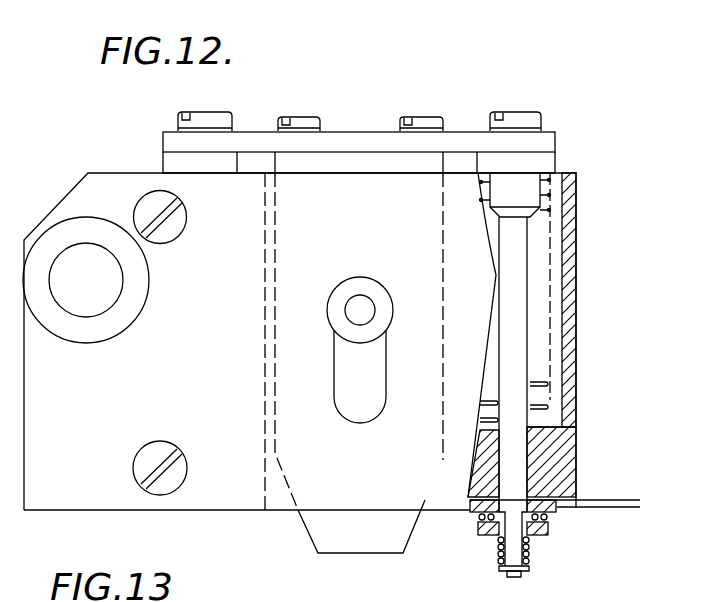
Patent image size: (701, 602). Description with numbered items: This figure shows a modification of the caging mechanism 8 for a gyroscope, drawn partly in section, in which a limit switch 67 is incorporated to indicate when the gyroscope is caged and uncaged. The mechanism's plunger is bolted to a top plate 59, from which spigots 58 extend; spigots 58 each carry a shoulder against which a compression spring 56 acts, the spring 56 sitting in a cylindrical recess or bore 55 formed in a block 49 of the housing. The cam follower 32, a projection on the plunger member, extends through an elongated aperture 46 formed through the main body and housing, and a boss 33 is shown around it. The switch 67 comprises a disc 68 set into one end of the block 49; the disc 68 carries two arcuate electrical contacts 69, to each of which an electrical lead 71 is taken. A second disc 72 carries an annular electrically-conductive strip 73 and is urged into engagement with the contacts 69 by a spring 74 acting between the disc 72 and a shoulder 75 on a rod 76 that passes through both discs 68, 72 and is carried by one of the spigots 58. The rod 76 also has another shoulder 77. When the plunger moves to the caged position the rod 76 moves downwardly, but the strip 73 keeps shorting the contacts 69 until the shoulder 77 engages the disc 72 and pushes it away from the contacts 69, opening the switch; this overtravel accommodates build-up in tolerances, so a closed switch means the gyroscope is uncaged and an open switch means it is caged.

The caging mechanism 8 is at (381, 124).
The top plate 59 is at (353, 140).
The spigot 58 is at (175, 163).
The compression spring 56 is at (550, 208).
The cylindrical recess or bore 55 is at (557, 311).
The block 49 is at (555, 444).
The boss 33 is at (373, 283).
The cam follower 32 is at (367, 310).
The elongated aperture 46 is at (378, 356).
The rod 76 is at (510, 438).
The disc 68 is at (472, 498).
The arcuate electrical contacts 69 is at (472, 517).
The electrical lead 71 is at (608, 499).
The annular electrically-conductive strip 73 is at (478, 523).
The shoulder 77 is at (490, 533).
The shoulder 75 is at (505, 568).
The spring 74 is at (532, 561).
The second disc 72 is at (543, 535).
The limit switch 67 is at (571, 536).